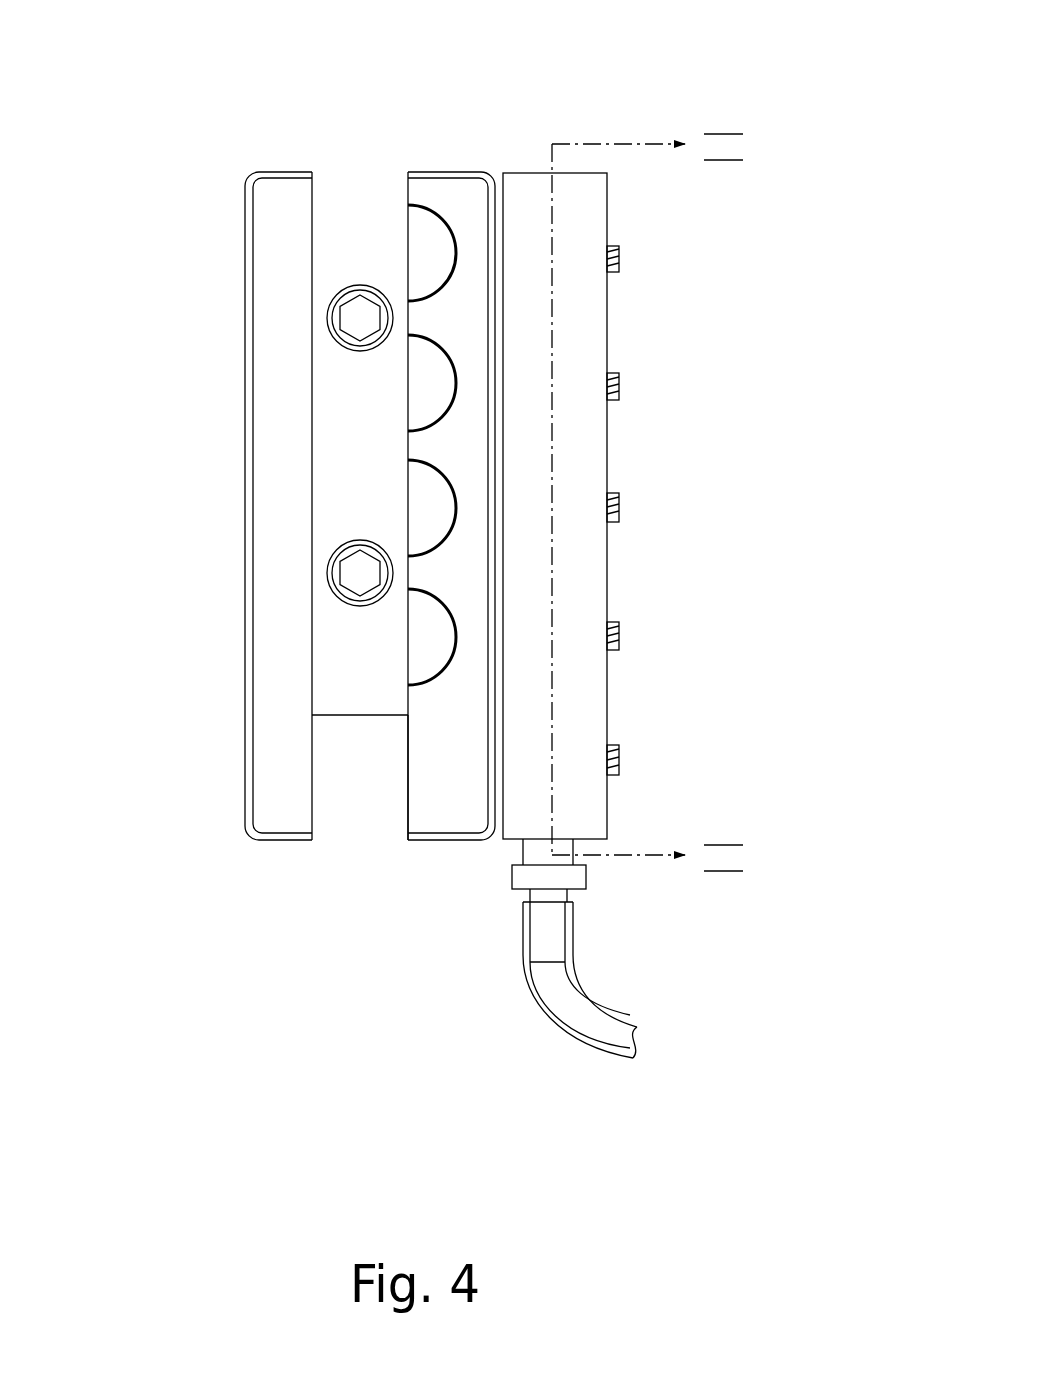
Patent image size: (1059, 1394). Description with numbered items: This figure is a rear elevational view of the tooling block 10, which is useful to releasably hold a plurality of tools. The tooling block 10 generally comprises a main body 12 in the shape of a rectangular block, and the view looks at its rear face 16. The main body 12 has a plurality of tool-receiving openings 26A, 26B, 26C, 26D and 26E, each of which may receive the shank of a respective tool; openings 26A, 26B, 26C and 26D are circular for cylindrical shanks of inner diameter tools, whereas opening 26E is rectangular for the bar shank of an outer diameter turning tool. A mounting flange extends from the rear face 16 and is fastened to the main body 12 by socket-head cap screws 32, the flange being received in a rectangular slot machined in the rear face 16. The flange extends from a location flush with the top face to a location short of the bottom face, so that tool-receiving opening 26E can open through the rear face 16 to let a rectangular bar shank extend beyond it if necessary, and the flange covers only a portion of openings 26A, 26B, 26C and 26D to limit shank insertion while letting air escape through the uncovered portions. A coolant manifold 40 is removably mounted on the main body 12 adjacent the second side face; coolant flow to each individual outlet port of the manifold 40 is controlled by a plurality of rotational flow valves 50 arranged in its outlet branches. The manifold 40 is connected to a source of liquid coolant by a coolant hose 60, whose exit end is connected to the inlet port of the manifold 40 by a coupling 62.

The tooling block 10 is at (503, 107).
The main body 12 is at (267, 172).
The rear face 16 is at (489, 328).
The tool-receiving opening 26A is at (457, 253).
The tool-receiving opening 26B is at (457, 383).
The tool-receiving opening 26C is at (457, 508).
The tool-receiving opening 26D is at (455, 638).
The tool-receiving opening 26E is at (407, 800).
The socket-head cap screws 32 is at (350, 320).
The coolant manifold 40 is at (607, 447).
The rotational flow valves 50 is at (619, 262).
The coolant hose 60 is at (552, 1033).
The coupling 62 is at (582, 873).